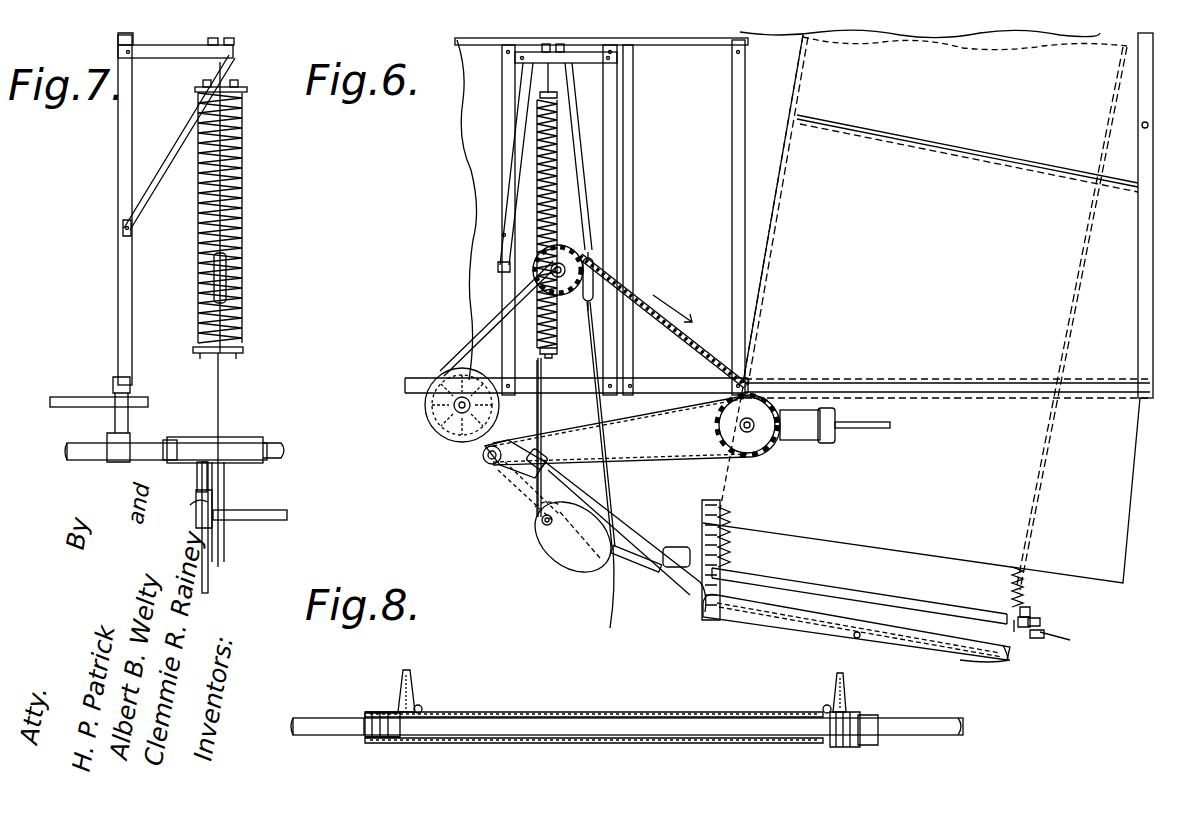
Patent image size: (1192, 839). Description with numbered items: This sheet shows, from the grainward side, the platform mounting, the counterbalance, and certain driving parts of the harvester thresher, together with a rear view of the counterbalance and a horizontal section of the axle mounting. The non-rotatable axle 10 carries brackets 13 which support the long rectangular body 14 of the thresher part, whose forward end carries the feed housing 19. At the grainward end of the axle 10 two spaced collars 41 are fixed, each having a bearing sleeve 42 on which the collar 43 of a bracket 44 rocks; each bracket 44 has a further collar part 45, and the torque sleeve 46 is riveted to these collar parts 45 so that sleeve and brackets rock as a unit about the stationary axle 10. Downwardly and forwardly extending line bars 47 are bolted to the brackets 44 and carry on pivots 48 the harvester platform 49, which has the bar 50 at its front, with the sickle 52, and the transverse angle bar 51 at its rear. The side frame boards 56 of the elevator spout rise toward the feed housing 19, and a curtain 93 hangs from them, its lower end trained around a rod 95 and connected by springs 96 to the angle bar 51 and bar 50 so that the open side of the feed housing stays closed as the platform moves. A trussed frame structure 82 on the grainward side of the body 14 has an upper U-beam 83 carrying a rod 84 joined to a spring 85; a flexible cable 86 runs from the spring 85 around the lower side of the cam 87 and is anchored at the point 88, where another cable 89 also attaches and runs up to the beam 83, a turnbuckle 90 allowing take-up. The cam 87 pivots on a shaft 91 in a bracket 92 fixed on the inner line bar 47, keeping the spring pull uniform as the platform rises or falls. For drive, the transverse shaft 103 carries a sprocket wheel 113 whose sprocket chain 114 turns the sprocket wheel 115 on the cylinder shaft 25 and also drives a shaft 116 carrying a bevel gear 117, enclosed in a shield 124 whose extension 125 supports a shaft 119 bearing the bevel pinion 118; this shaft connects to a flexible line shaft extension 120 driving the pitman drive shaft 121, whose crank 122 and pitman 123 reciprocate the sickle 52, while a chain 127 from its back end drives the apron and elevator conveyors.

In FIG. 7, the axle 10 is at (275, 452).
In FIG. 8, the axle 10 is at (958, 708).
In FIG. 7, the brackets 13 is at (110, 418).
In FIG. 6, the brackets 13 is at (530, 408).
In FIG. 6, the body 14 is at (468, 172).
In FIG. 6, the feed housing 19 is at (745, 45).
In FIG. 6, the cylinder shaft 25 is at (561, 329).
In FIG. 7, the collars 41 is at (168, 440).
In FIG. 8, the collars 41 is at (362, 738).
In FIG. 8, the bearing sleeve 42 is at (395, 738).
In FIG. 8, the collar 43 is at (395, 712).
In FIG. 7, the bracket 44 is at (197, 470).
In FIG. 6, the bracket 44 is at (503, 482).
In FIG. 8, the bracket 44 is at (412, 690).
In FIG. 8, the collar part 45 is at (422, 705).
In FIG. 7, the torque sleeve 46 is at (240, 436).
In FIG. 8, the torque sleeve 46 is at (600, 712).
In FIG. 7, the line bars 47 is at (208, 580).
In FIG. 6, the line bars 47 is at (665, 598).
In FIG. 6, the pivots 48 is at (860, 640).
In FIG. 6, the harvester platform 49 is at (965, 662).
In FIG. 6, the bar 50 is at (1015, 650).
In FIG. 6, the transverse angle bar 51 is at (722, 620).
In FIG. 6, the sickle 52 is at (1045, 630).
In FIG. 6, the side frame boards 56 is at (800, 85).
In FIG. 7, the frame structure 82 is at (118, 150).
In FIG. 6, the frame structure 82 is at (617, 145).
In FIG. 7, the upper U-beam 83 is at (170, 58).
In FIG. 6, the upper U-beam 83 is at (535, 65).
In FIG. 7, the rod 84 is at (215, 58).
In FIG. 6, the rod 84 is at (546, 78).
In FIG. 7, the spring 85 is at (240, 205).
In FIG. 6, the spring 85 is at (538, 200).
In FIG. 7, the flexible cable 86 is at (222, 372).
In FIG. 6, the flexible cable 86 is at (543, 420).
In FIG. 7, the cam 87 is at (224, 548).
In FIG. 6, the cam 87 is at (565, 550).
In FIG. 6, the anchoring point 88 is at (604, 597).
In FIG. 6, the cable 89 is at (608, 486).
In FIG. 7, the turnbuckle 90 is at (226, 265).
In FIG. 6, the turnbuckle 90 is at (593, 290).
In FIG. 7, the shaft 91 is at (287, 515).
In FIG. 6, the shaft 91 is at (542, 526).
In FIG. 7, the bracket 92 is at (212, 500).
In FIG. 6, the bracket 92 is at (524, 513).
In FIG. 6, the curtain 93 is at (1130, 500).
In FIG. 6, the rod 95 is at (958, 383).
In FIG. 6, the springs 96 is at (732, 525).
In FIG. 6, the transverse shaft 103 is at (765, 430).
In FIG. 6, the sprocket wheel 113 is at (755, 420).
In FIG. 6, the sprocket chain 114 is at (720, 345).
In FIG. 6, the sprocket wheel 115 is at (580, 262).
In FIG. 6, the shaft 116 is at (432, 413).
In FIG. 6, the bevel gear 117 is at (425, 405).
In FIG. 6, the bevel pinion 118 is at (462, 420).
In FIG. 6, the shaft 119 is at (516, 448).
In FIG. 6, the flexible line shaft extension 120 is at (700, 512).
In FIG. 6, the pitman drive shaft 121 is at (828, 590).
In FIG. 6, the crank 122 is at (1030, 608).
In FIG. 6, the pitman 123 is at (1035, 615).
In FIG. 6, the shield 124 is at (460, 368).
In FIG. 6, the extension 125 is at (482, 470).
In FIG. 6, the chain 127 is at (700, 505).